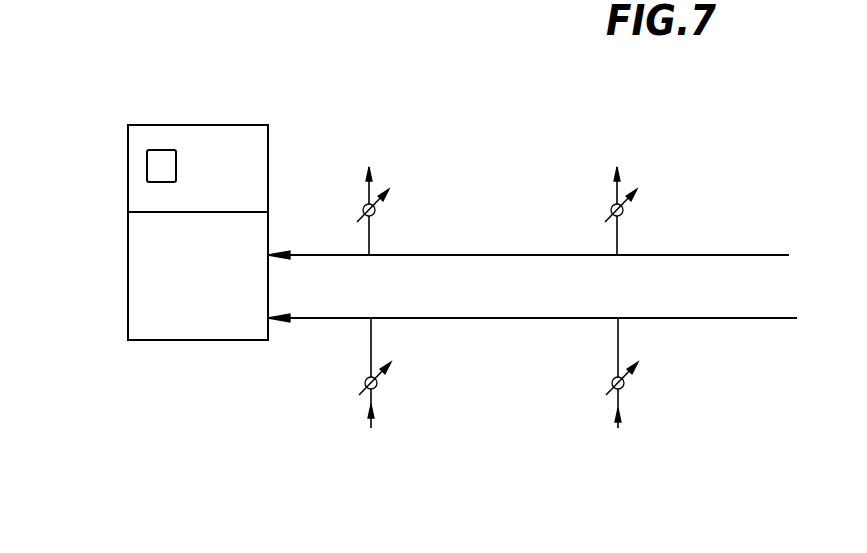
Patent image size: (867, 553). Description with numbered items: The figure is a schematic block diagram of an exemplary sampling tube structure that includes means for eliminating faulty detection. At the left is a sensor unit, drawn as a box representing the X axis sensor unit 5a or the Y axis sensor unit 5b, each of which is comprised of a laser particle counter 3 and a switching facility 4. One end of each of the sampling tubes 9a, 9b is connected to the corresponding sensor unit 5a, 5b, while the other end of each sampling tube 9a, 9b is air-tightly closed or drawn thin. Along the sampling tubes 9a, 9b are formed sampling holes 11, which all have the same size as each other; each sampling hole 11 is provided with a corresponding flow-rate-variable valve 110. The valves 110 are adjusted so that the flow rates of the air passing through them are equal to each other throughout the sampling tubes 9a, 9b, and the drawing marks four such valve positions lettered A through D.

The laser particle counter 3 is at (128, 175).
The switching facility 4 is at (128, 294).
The X axis sensor unit 5a is at (168, 179).
The Y axis sensor unit 5b is at (168, 179).
The sampling tube 9a is at (545, 297).
The sampling tube 9b is at (761, 255).
The sampling holes 11 is at (369, 163).
The flow-rate-variable valves 110 is at (385, 207).